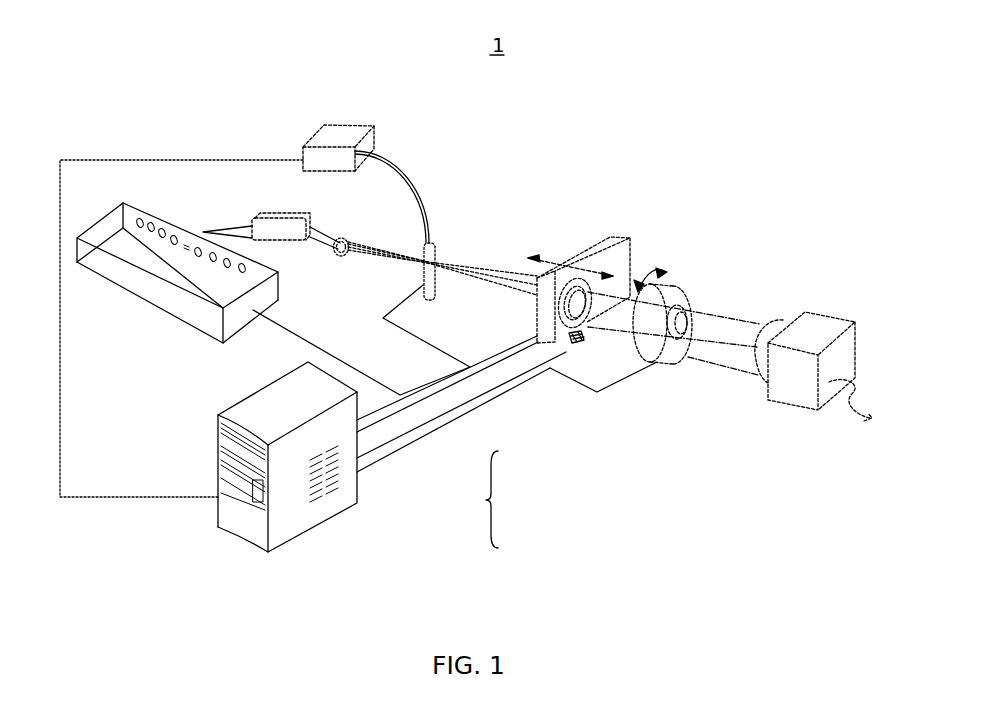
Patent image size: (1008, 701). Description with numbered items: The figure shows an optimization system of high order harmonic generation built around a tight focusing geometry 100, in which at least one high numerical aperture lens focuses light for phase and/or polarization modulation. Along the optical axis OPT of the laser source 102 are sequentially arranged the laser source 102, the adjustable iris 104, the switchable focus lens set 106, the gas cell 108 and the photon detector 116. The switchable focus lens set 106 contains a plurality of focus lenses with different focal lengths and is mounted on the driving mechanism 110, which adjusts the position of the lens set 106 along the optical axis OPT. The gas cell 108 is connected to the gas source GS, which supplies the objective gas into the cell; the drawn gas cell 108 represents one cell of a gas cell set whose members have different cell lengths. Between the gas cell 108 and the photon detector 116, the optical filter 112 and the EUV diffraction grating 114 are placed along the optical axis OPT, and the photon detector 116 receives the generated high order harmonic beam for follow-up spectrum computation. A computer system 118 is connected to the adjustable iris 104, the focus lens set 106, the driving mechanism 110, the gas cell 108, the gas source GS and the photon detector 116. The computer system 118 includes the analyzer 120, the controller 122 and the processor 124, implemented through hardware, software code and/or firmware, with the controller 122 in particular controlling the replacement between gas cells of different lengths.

The tight focusing geometry 100 is at (617, 148).
The laser source 102 is at (817, 310).
The adjustable iris 104 is at (677, 282).
The switchable focus lens set 106 is at (573, 258).
The gas cell 108 is at (433, 243).
The driving mechanism 110 is at (545, 332).
The optical filter 112 is at (342, 237).
The EUV diffraction grating 114 is at (253, 227).
The photon detector 116 is at (140, 297).
The computer system 118 is at (340, 522).
The analyzer 120 is at (528, 464).
The controller 122 is at (528, 502).
The processor 124 is at (528, 544).
The gas source GS is at (373, 133).
The optical axis OPT is at (732, 340).